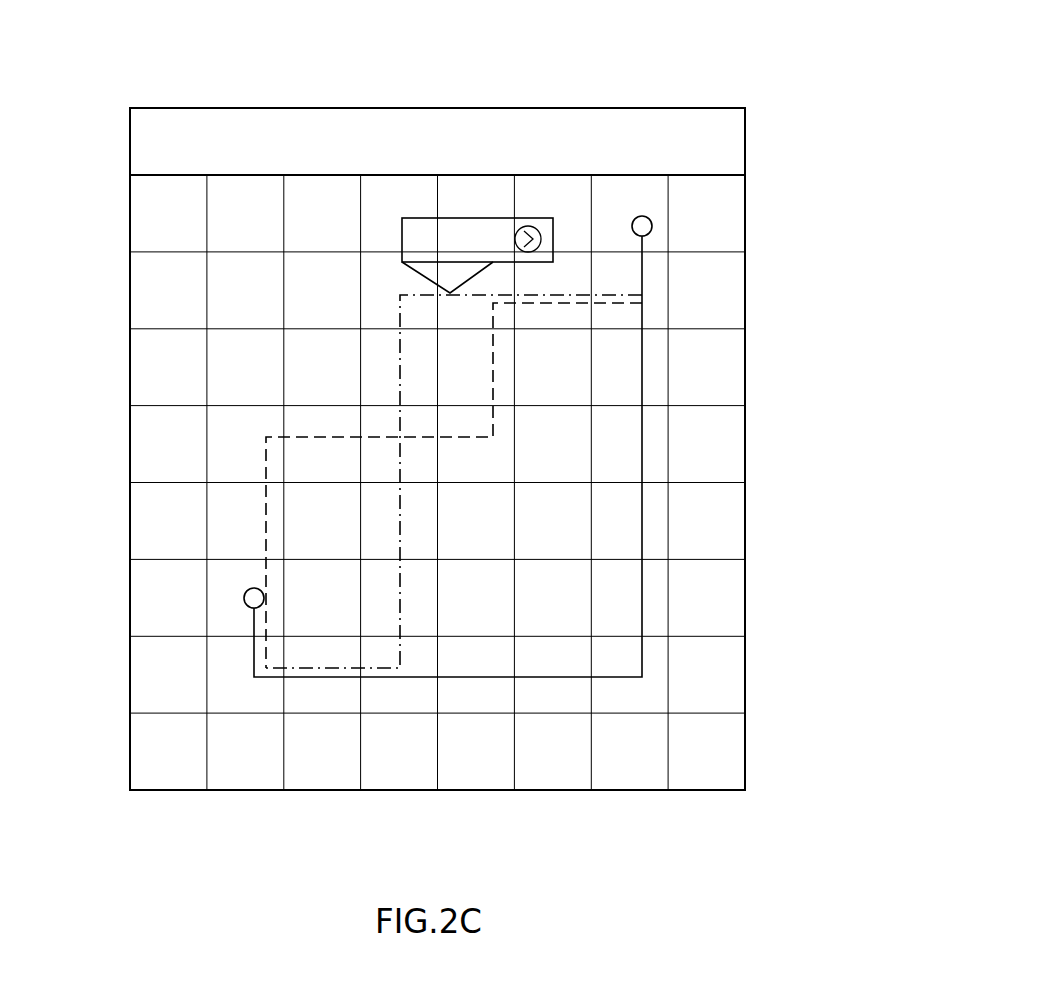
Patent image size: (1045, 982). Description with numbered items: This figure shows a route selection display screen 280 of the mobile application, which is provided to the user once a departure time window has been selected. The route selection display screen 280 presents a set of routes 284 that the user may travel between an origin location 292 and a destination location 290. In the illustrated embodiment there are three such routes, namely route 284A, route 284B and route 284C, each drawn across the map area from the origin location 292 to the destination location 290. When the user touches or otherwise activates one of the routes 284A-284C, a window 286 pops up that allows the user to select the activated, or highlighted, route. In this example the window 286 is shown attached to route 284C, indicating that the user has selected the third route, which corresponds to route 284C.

The route selection display screen 280 is at (652, 78).
The routes 284 is at (130, 197).
The route 284A is at (532, 680).
The route 284B is at (267, 462).
The route 284C is at (400, 318).
The window 286 is at (552, 218).
The destination location 290 is at (652, 220).
The origin location 292 is at (244, 598).